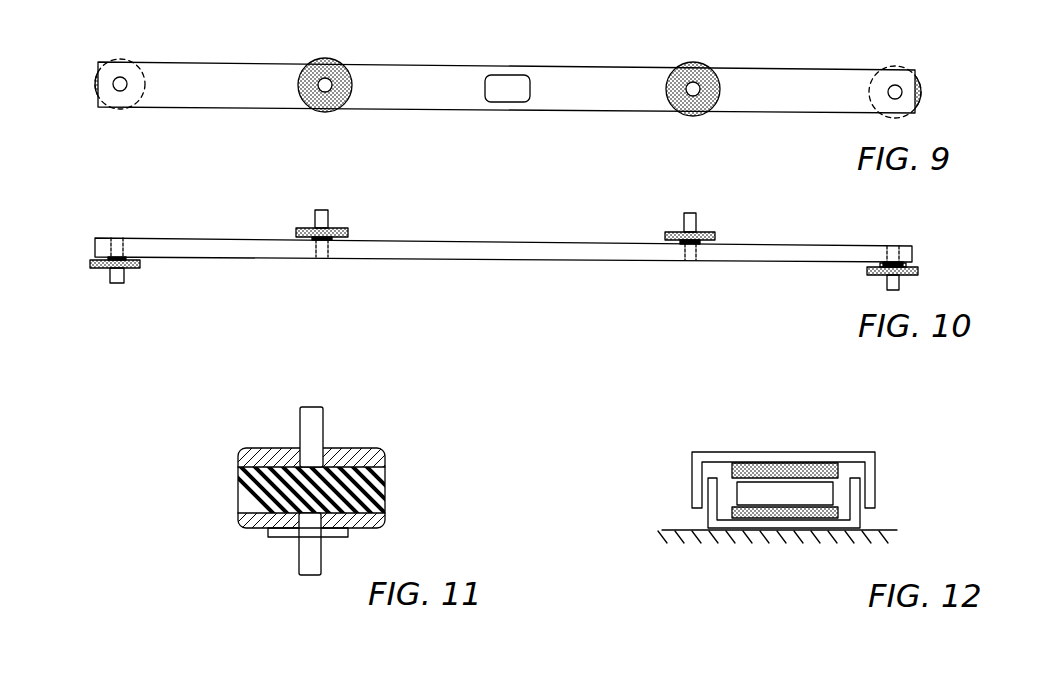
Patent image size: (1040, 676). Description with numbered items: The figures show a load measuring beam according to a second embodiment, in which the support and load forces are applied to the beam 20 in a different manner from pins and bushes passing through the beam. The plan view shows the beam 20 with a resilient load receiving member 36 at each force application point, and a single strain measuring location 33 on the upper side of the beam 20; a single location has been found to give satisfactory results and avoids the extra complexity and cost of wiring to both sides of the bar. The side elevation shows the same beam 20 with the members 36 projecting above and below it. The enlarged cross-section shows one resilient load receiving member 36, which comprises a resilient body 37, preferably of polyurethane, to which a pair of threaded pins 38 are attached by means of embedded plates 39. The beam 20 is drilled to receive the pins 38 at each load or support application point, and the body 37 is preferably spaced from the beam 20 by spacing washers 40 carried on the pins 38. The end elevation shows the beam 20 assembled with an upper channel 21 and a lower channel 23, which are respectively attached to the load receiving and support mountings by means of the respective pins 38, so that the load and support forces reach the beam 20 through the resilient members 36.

In FIG. 9, the beam 20 is at (457, 68).
In FIG. 12, the beam 20 is at (745, 495).
In FIG. 12, the upper channel 21 is at (708, 452).
In FIG. 12, the lower channel 23 is at (745, 528).
In FIG. 9, the strain measuring location 33 is at (518, 80).
In FIG. 9, the resilient load receiving member 36 is at (120, 58).
In FIG. 10, the resilient load receiving member 36 is at (100, 264).
In FIG. 11, the resilient load receiving member 36 is at (290, 506).
In FIG. 12, the resilient load receiving member 36 is at (815, 470).
In FIG. 11, the resilient body 37 is at (240, 498).
In FIG. 10, the threaded pins 38 is at (328, 212).
In FIG. 11, the threaded pins 38 is at (325, 425).
In FIG. 11, the embedded plates 39 is at (375, 450).
In FIG. 10, the spacing washers 40 is at (915, 265).
In FIG. 11, the spacing washers 40 is at (278, 538).